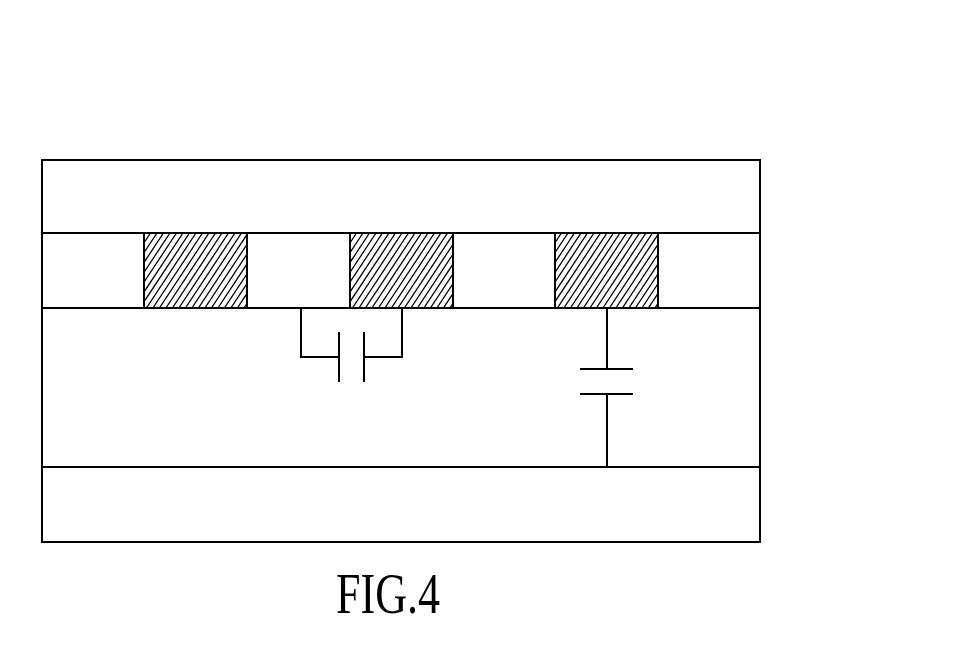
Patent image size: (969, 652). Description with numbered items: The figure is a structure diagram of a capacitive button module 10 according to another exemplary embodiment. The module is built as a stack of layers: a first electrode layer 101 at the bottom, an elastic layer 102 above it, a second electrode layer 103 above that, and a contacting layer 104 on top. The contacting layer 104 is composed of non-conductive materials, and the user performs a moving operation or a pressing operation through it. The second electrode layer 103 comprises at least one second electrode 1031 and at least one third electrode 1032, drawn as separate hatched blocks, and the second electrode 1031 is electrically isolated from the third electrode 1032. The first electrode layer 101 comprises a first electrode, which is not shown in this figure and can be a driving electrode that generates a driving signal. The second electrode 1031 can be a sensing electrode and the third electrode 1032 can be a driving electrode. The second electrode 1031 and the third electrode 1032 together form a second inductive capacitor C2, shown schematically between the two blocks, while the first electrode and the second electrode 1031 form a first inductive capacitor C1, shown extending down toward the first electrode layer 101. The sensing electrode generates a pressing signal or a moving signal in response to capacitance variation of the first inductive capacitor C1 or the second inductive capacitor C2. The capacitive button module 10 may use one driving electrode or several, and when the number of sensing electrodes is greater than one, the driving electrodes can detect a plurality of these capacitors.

The capacitive button module 10 is at (84, 80).
The first electrode layer 101 is at (760, 515).
The elastic layer 102 is at (760, 410).
The second electrode layer 103 is at (760, 273).
The contacting layer 104 is at (760, 193).
The second electrode 1031 is at (172, 310).
The third electrode 1032 is at (263, 310).
The first inductive capacitor C1 is at (626, 387).
The second inductive capacitor C2 is at (351, 366).